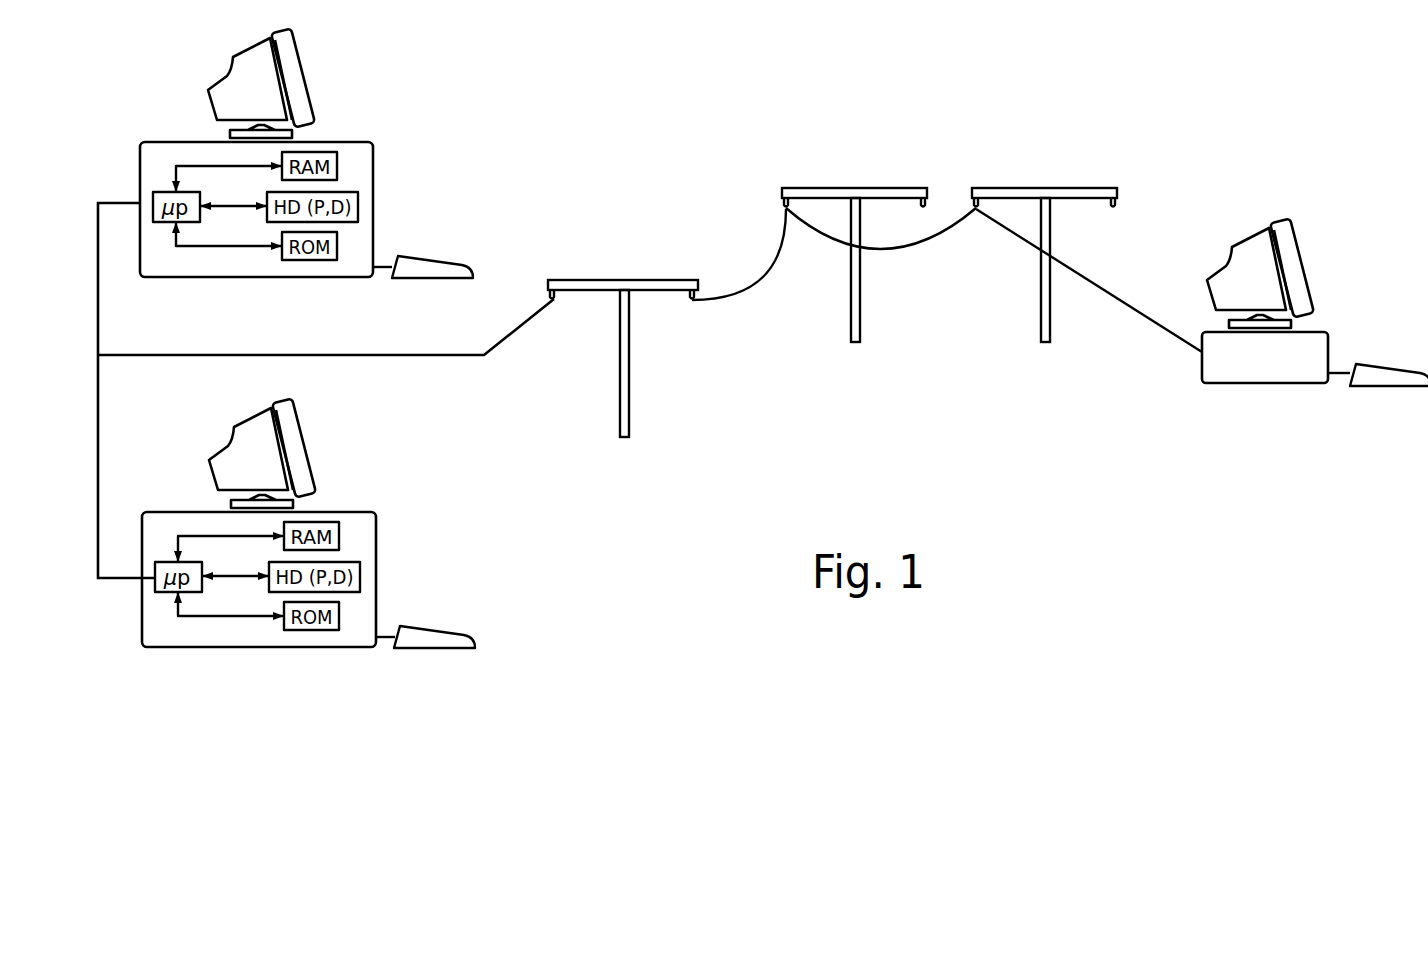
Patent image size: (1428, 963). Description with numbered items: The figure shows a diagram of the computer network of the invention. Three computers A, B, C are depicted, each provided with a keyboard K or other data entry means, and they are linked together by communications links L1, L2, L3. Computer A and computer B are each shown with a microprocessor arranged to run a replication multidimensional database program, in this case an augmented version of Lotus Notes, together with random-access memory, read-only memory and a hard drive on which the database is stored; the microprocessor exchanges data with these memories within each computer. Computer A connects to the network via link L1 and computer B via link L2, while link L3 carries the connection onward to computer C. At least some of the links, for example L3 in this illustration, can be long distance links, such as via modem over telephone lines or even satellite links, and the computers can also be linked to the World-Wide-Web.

The computer A is at (277, 647).
The computer B is at (276, 277).
The computer C is at (1277, 383).
The keyboard K is at (437, 278).
The communications link L1 is at (99, 383).
The communications link L2 is at (99, 310).
The communications link L3 is at (510, 340).